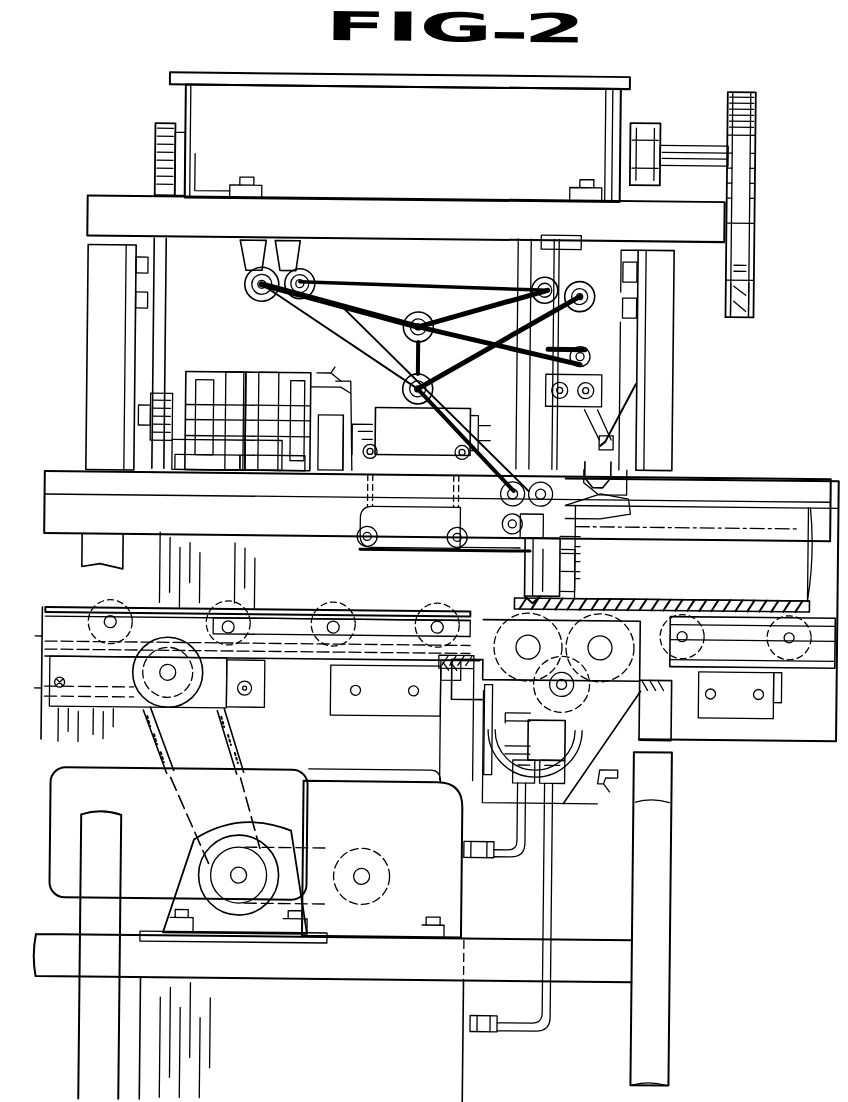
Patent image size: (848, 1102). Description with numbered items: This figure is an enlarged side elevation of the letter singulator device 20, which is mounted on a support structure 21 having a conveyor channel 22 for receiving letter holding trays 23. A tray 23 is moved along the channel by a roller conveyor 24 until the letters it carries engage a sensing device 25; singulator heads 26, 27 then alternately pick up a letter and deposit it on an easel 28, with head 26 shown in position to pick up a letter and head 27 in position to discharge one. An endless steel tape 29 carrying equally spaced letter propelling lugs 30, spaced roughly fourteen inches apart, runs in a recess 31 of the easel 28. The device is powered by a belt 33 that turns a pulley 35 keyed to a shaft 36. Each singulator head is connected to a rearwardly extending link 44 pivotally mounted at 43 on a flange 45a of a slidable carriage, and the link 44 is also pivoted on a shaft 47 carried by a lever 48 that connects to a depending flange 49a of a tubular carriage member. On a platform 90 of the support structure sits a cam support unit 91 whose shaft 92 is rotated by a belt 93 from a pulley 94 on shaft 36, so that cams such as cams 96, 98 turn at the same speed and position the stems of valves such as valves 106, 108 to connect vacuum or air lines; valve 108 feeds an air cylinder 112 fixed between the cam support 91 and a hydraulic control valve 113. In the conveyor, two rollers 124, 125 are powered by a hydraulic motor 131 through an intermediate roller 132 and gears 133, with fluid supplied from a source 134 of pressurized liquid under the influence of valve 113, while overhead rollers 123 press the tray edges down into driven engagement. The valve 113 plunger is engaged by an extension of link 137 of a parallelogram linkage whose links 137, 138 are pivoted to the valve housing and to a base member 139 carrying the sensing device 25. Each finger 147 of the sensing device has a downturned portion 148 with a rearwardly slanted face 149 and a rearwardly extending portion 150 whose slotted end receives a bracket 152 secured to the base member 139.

The letter singulator device 20 is at (700, 42).
The support structure 21 is at (676, 845).
The conveyor channel 22 is at (70, 622).
The letter holding tray 23 is at (799, 512).
The roller conveyor 24 is at (822, 655).
The sensing device 25 is at (536, 585).
The singulator head 26 is at (503, 533).
The singulator head 27 is at (594, 364).
The easel 28 is at (638, 389).
The endless steel tape 29 is at (616, 430).
The letter propelling lug 30 is at (610, 459).
The recess 31 is at (612, 439).
The belt 33 is at (752, 262).
The pulley 35 is at (752, 123).
The shaft 36 is at (681, 146).
The pivot 43 is at (309, 280).
The rearwardly extending link 44 is at (338, 334).
The flange 45a is at (249, 274).
The shaft 47 is at (416, 375).
The lever 48 is at (502, 312).
The depending flange 49a is at (577, 253).
The platform 90 is at (146, 496).
The cam support unit 91 is at (179, 455).
The shaft 92 is at (157, 403).
The belt 93 is at (158, 346).
The pulley 94 is at (151, 133).
The cam 96 is at (221, 380).
The cam 98 is at (272, 380).
The valve 106 is at (203, 472).
The valve 108 is at (260, 472).
The air cylinder 112 is at (328, 471).
The hydraulic control valve 113 is at (386, 445).
The overhead roller 123 is at (610, 520).
The powered roller 124 is at (512, 612).
The powered roller 125 is at (628, 600).
The hydraulic motor 131 is at (530, 733).
The intermediate roller 132 is at (490, 699).
The gears 133 is at (628, 714).
The source of pressurized liquid 134 is at (351, 823).
The link 137 is at (372, 520).
The link 138 is at (456, 522).
The base member 139 is at (377, 548).
The finger 147 is at (583, 543).
The downturned portion 148 is at (583, 577).
The rearwardly slanted face 149 is at (583, 560).
The rearwardly extending portion 150 is at (548, 578).
The bracket 152 is at (402, 552).